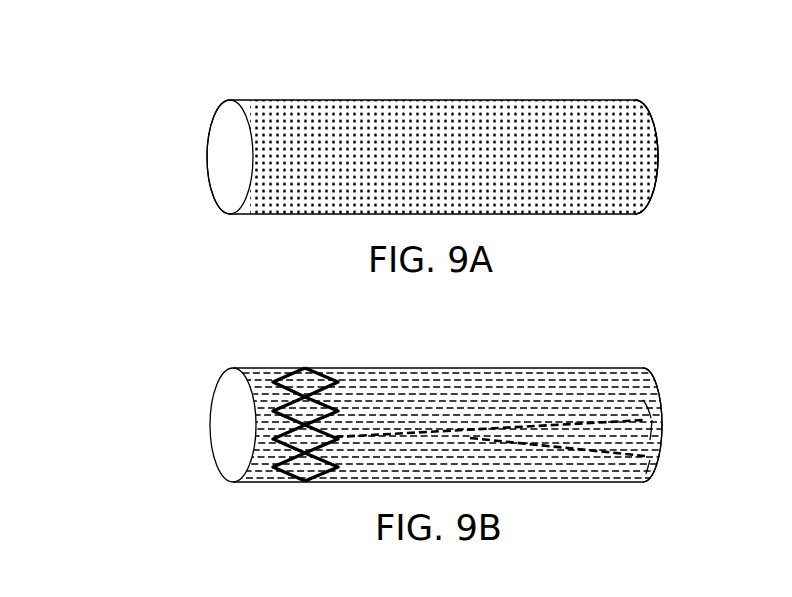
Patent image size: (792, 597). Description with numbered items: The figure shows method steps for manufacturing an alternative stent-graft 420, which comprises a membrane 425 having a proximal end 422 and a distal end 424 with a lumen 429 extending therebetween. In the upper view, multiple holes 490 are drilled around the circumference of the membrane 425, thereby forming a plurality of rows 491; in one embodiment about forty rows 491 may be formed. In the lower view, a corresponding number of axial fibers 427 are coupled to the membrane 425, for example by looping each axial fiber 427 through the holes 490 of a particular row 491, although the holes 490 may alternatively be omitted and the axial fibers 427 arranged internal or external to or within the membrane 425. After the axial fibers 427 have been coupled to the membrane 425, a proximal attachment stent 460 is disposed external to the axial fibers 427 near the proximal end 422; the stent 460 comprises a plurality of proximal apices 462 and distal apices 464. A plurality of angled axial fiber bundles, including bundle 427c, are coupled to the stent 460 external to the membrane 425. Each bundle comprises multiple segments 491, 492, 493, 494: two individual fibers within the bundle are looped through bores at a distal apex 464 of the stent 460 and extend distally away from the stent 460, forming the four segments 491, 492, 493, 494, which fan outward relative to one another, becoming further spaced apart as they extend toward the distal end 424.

In FIG. 9A, the stent-graft 420 is at (239, 84).
In FIG. 9A, the proximal end 422 is at (229, 230).
In FIG. 9B, the proximal end 422 is at (233, 498).
In FIG. 9A, the distal end 424 is at (642, 230).
In FIG. 9B, the distal end 424 is at (647, 498).
In FIG. 9A, the membrane 425 is at (333, 117).
In FIG. 9B, the axial fiber 427 is at (633, 370).
In FIG. 9B, the angled axial fiber bundle 427c is at (538, 455).
In FIG. 9A, the lumen 429 is at (230, 143).
In FIG. 9B, the proximal attachment stent 460 is at (293, 420).
In FIG. 9B, the proximal apices 462 is at (277, 463).
In FIG. 9B, the distal apices 464 is at (323, 382).
In FIG. 9A, the holes 490 is at (537, 111).
In FIG. 9A, the rows / first segment 491 is at (658, 158).
In FIG. 9B, the rows / first segment 491 is at (652, 418).
In FIG. 9B, the second segment 492 is at (650, 431).
In FIG. 9B, the third segment 493 is at (650, 437).
In FIG. 9B, the fourth segment 494 is at (648, 470).